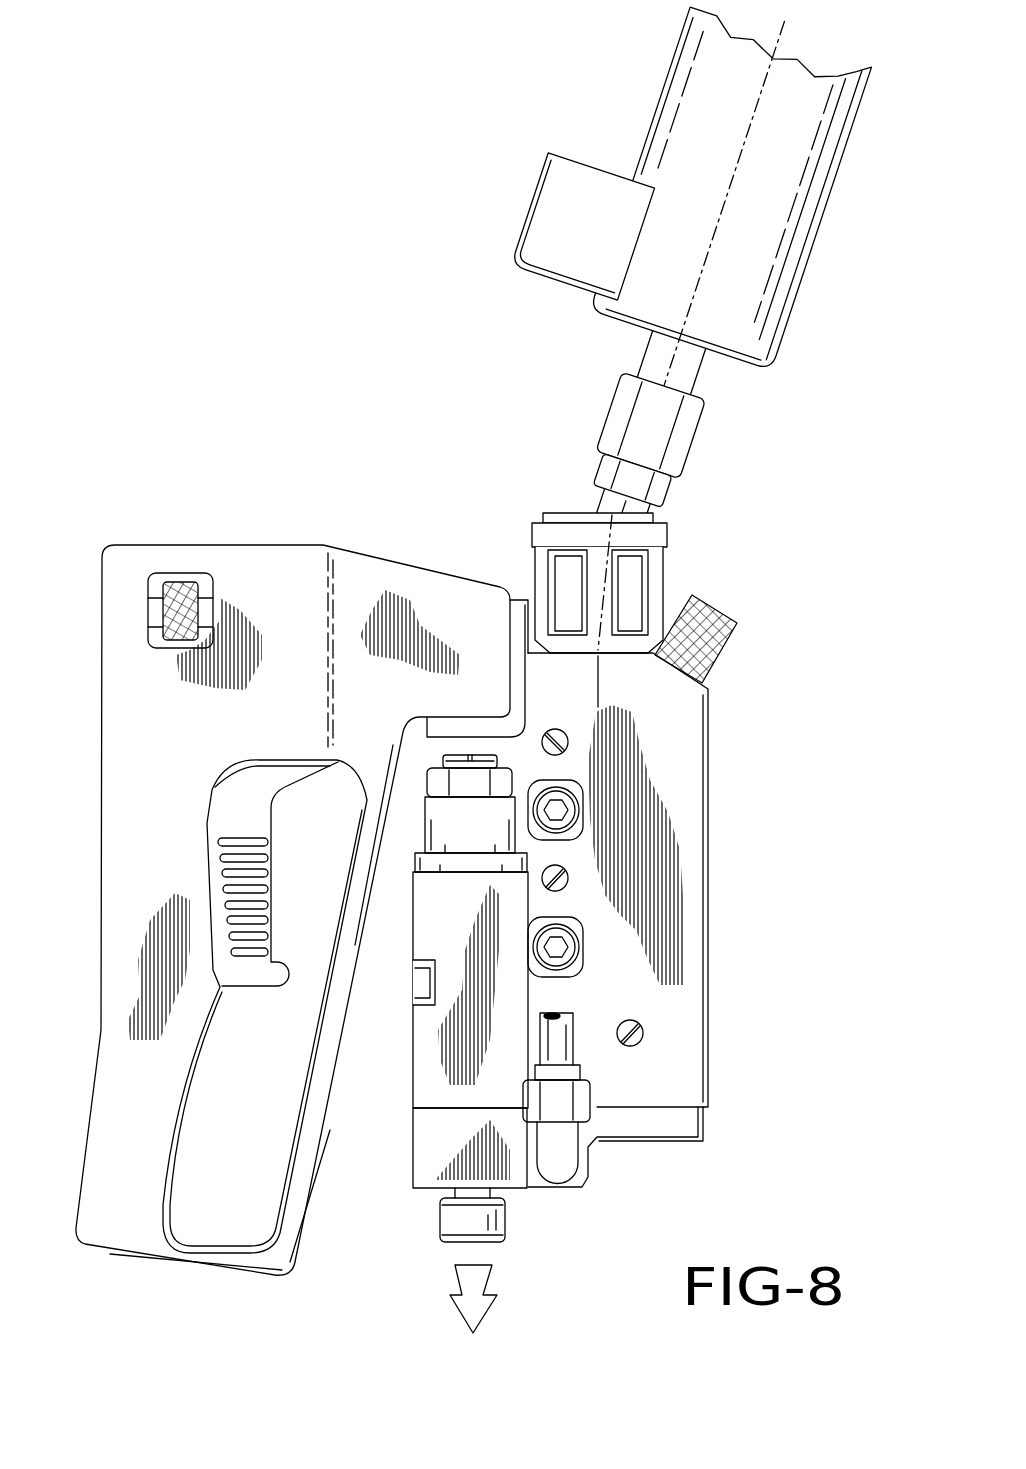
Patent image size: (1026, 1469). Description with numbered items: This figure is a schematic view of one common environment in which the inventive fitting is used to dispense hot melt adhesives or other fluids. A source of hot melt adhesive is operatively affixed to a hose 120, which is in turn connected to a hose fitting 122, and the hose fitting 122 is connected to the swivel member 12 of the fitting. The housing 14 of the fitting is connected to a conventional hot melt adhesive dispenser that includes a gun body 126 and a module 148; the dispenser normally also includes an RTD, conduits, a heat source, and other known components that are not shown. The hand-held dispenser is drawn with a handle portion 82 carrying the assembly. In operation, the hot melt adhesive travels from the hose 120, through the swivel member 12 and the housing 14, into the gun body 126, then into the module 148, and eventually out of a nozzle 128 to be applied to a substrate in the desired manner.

The gun housing 82 is at (250, 558).
The hose 120 is at (685, 93).
The hose fitting 122 is at (618, 414).
The swivel member 12 is at (612, 502).
The housing 14 is at (655, 578).
The gun body 126 is at (677, 821).
The module 148 is at (422, 1078).
The nozzle 128 is at (478, 1217).